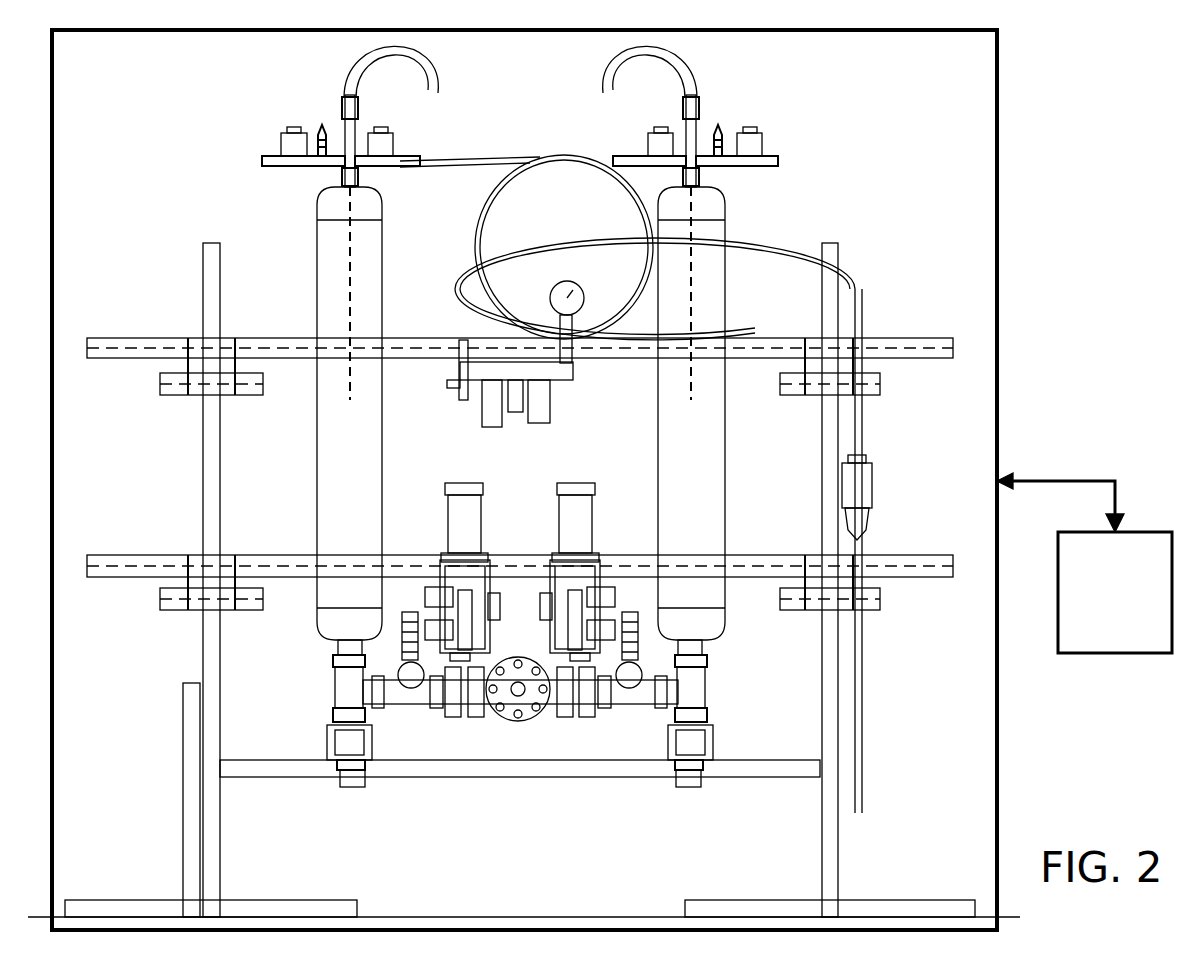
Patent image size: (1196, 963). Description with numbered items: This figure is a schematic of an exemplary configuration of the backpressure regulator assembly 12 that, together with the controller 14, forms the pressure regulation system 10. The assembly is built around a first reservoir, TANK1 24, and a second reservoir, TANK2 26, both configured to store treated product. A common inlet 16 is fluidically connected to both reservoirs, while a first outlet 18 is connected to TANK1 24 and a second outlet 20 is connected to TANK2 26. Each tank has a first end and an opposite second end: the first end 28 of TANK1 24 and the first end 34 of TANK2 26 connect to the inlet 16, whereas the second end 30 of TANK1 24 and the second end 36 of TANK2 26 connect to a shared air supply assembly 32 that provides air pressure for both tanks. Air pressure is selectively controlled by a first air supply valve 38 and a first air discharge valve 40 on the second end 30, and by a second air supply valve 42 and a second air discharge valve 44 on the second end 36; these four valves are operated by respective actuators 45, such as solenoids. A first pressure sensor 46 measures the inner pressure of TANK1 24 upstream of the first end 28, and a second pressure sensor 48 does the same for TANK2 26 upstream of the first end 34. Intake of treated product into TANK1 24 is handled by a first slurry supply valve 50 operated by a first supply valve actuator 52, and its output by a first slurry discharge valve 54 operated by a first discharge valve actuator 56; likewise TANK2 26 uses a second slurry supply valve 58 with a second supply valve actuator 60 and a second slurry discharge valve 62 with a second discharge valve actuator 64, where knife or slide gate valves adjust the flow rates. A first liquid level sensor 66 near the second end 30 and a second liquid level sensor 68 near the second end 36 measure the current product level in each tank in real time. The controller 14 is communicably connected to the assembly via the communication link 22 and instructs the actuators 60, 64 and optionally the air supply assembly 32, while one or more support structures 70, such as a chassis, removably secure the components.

The pressure regulation system 10 is at (1070, 138).
The backpressure regulator assembly 12 is at (997, 382).
The controller 14 is at (1117, 653).
The inlet 16 is at (520, 697).
The first outlet 18 is at (693, 792).
The second outlet 20 is at (357, 790).
The communication link 22 is at (1073, 478).
The first reservoir 24 is at (725, 475).
The second reservoir 26 is at (317, 475).
The first end of TANK1 28 is at (705, 648).
The second end of TANK1 30 is at (707, 185).
The air supply assembly 32 is at (565, 428).
The first end of TANK2 34 is at (333, 650).
The second end of TANK2 36 is at (333, 188).
The first air supply valve 38 is at (645, 161).
The first air discharge valve 40 is at (760, 161).
The second air supply valve 42 is at (400, 161).
The second air discharge valve 44 is at (285, 161).
The actuators 45 is at (293, 133).
The first pressure sensor 46 is at (633, 612).
The second pressure sensor 48 is at (407, 612).
The first slurry supply valve 50 is at (578, 715).
The first supply valve actuator 52 is at (557, 528).
The first slurry discharge valve 54 is at (678, 767).
The first discharge valve actuator 56 is at (692, 745).
The second slurry supply valve 58 is at (470, 715).
The second supply valve actuator 60 is at (482, 527).
The second slurry discharge valve 62 is at (365, 767).
The second discharge valve actuator 64 is at (350, 742).
The first liquid level sensor 66 is at (694, 96).
The second liquid level sensor 68 is at (346, 96).
The support structures 70 is at (150, 556).